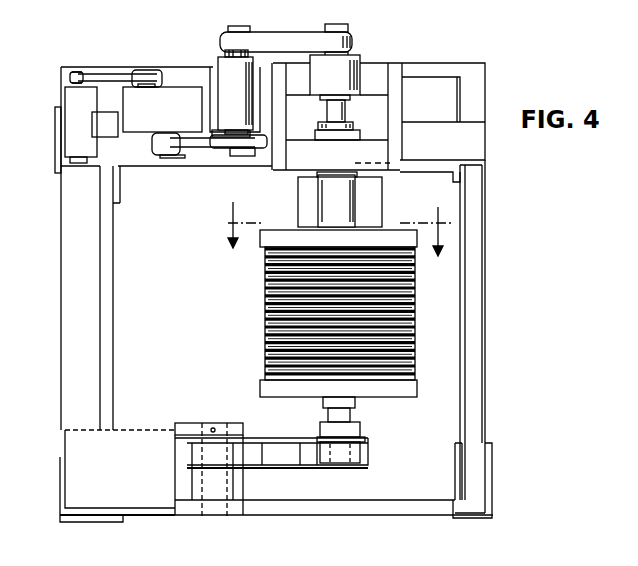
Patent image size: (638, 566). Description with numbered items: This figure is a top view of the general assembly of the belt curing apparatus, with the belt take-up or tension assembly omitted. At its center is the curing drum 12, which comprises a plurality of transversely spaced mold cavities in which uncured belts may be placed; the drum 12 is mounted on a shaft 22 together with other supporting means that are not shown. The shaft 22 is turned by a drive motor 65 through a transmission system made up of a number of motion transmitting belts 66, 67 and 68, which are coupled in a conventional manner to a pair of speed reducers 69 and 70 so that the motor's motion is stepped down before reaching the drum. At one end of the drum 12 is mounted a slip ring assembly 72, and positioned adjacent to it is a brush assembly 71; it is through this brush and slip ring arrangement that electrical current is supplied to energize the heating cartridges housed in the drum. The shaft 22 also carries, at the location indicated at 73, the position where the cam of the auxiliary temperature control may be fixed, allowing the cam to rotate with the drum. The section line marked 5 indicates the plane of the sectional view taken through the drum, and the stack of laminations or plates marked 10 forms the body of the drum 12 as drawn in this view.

The section line 5- 5 is at (340, 239).
The stacked plates 10 is at (262, 326).
The curing drum 12 is at (256, 348).
The shaft 22 is at (327, 113).
The drive motor 65 is at (68, 94).
The motion transmitting belt 66 is at (113, 73).
The motion transmitting belt 67 is at (196, 150).
The motion transmitting belt 68 is at (283, 38).
The speed reducer 69 is at (167, 92).
The speed reducer 70 is at (230, 70).
The brush assembly 71 is at (377, 201).
The slip ring assembly 72 is at (326, 208).
The cam position 73 is at (352, 127).